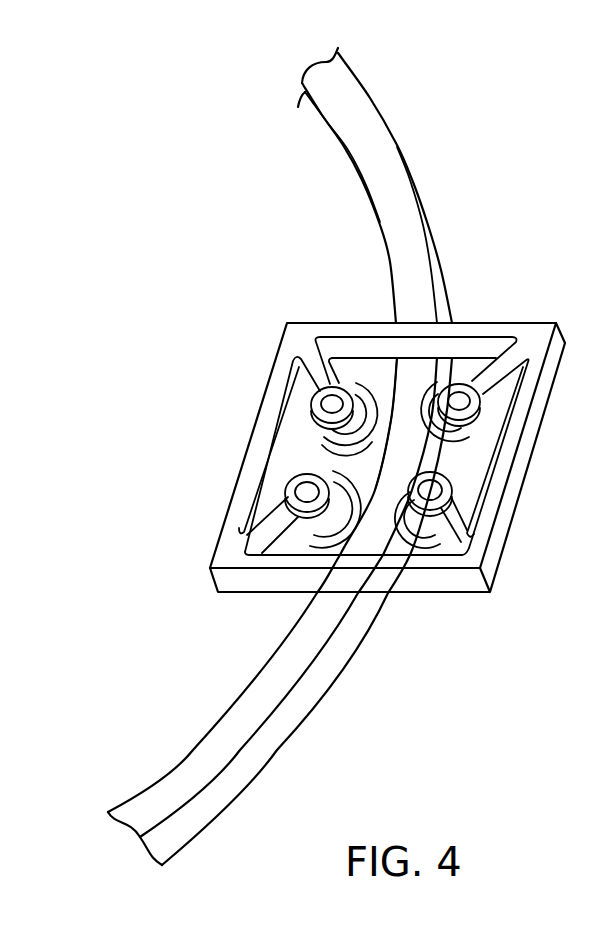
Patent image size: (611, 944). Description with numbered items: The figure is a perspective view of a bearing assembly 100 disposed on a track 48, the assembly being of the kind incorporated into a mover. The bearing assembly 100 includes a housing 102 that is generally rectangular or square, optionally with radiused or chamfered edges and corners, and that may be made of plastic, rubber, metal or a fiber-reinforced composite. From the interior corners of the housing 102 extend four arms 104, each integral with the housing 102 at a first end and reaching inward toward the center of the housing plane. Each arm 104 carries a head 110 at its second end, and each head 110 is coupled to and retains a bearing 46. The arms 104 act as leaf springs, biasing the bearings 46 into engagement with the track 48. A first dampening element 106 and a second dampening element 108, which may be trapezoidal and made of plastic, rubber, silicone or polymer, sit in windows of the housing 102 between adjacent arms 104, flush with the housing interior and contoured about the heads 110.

The track 48 is at (390, 128).
The bearing 46 is at (383, 394).
The bearing assembly 100 is at (222, 346).
The housing 102 is at (493, 573).
The arm 104 is at (272, 533).
The first dampening element 106 is at (277, 466).
The second dampening element 108 is at (480, 450).
The head 110 is at (317, 520).